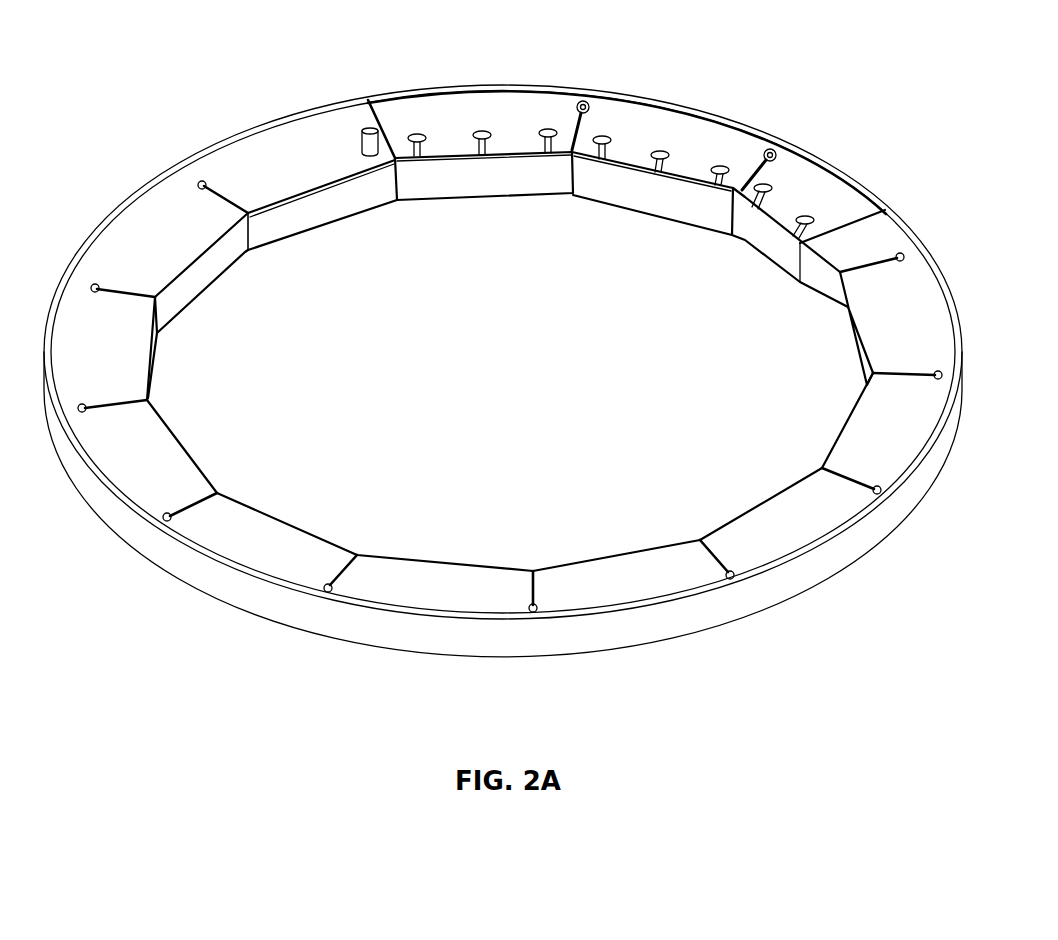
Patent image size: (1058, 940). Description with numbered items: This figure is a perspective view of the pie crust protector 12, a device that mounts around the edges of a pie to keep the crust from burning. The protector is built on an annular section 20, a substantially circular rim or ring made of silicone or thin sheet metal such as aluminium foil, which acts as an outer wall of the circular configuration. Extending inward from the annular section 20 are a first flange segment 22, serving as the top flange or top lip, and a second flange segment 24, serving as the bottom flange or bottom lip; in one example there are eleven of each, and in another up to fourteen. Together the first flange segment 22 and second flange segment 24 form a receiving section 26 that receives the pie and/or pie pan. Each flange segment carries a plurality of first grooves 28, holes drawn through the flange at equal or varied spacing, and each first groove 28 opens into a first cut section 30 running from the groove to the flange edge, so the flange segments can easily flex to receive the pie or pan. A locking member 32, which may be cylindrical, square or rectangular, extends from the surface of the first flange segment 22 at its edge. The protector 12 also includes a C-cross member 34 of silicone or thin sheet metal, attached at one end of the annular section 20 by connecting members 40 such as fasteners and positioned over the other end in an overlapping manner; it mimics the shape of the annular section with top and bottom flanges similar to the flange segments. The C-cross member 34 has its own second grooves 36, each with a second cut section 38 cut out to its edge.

The pie crust protector 12 is at (160, 48).
The annular section 20 is at (120, 522).
The first flange segment 22 is at (916, 292).
The second flange segment 24 is at (500, 178).
The receiving section 26 is at (320, 198).
The first grooves 28 is at (160, 518).
The first cut section 30 is at (196, 492).
The locking member 32 is at (370, 128).
The C-cross member 34 is at (822, 188).
The second grooves 36 is at (660, 150).
The second cut section 38 is at (648, 168).
The connecting members 40 is at (772, 150).